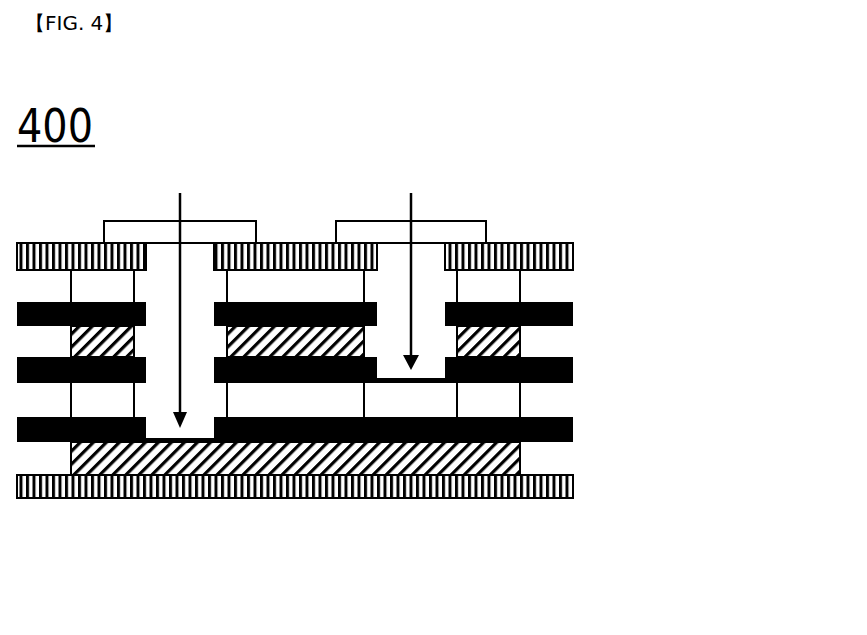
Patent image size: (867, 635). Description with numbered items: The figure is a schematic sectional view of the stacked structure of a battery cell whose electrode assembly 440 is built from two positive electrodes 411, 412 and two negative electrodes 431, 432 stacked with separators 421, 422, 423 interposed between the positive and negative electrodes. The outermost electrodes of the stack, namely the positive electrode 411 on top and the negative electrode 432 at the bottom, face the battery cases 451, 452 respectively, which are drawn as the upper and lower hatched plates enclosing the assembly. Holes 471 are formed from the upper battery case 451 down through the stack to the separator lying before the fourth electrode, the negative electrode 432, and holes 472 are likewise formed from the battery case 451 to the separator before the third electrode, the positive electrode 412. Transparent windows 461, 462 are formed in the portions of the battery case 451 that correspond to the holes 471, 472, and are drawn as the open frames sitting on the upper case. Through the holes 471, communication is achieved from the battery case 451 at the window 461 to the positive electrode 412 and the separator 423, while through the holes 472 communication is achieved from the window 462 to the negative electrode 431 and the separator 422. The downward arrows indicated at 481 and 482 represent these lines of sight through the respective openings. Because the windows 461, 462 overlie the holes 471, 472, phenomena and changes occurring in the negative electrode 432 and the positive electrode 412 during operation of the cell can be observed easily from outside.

The positive electrode 411 is at (522, 286).
The positive electrode 412 is at (522, 400).
The separator 421 is at (573, 312).
The separator 422 is at (573, 362).
The separator 423 is at (573, 425).
The negative electrode 431 is at (520, 342).
The negative electrode 432 is at (369, 460).
The electrode assembly 440 is at (389, 371).
The battery case 451 is at (538, 243).
The battery case 452 is at (538, 498).
The transparent window 461 is at (256, 221).
The transparent window 462 is at (486, 221).
The holes 471 is at (144, 286).
The holes 472 is at (399, 286).
The first cavity 481 is at (180, 299).
The second cavity 482 is at (410, 270).